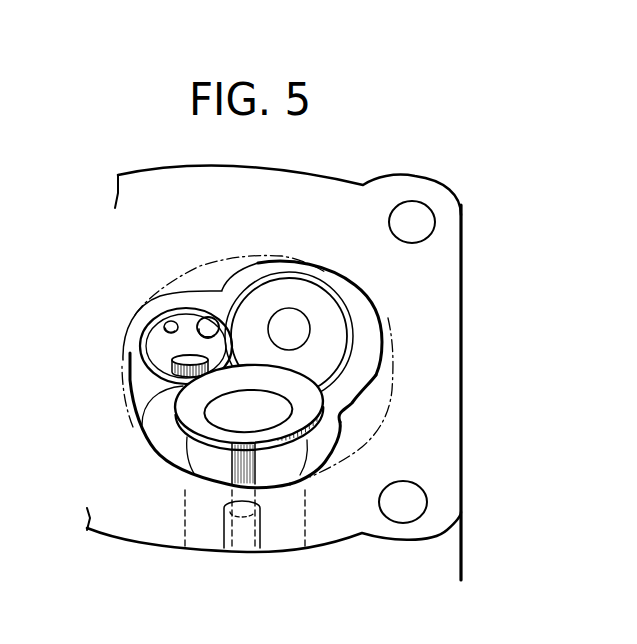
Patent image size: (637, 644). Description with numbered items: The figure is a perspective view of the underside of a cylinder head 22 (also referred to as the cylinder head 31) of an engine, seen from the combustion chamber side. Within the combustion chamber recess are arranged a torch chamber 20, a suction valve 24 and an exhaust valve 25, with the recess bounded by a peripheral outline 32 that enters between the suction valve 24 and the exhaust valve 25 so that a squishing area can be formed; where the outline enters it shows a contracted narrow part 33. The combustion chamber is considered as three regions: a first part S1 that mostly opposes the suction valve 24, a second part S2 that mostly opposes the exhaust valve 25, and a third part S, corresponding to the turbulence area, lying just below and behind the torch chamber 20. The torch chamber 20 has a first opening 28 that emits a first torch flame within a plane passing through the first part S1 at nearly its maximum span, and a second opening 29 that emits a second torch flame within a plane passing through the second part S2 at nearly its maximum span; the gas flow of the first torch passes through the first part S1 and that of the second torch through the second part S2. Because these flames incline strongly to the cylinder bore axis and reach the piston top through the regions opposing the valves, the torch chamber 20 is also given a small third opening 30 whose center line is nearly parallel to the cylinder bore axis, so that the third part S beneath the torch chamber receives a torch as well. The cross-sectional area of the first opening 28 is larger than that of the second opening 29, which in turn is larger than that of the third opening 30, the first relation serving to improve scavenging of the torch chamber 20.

The torch chamber 20 is at (157, 342).
The cylinder head 22 is at (435, 283).
The suction valve 24 is at (203, 421).
The exhaust valve 25 is at (283, 297).
The opening 28 is at (172, 366).
The opening 29 is at (213, 320).
The third opening 30 is at (168, 324).
The cylinder head 31 is at (348, 388).
The peripheral outline 32 is at (383, 360).
The contracted narrow part 33 is at (350, 404).
The third part of the combustion chamber S is at (383, 378).
The first part of the combustion chamber S1 is at (158, 428).
The second part of the combustion chamber S2 is at (367, 328).